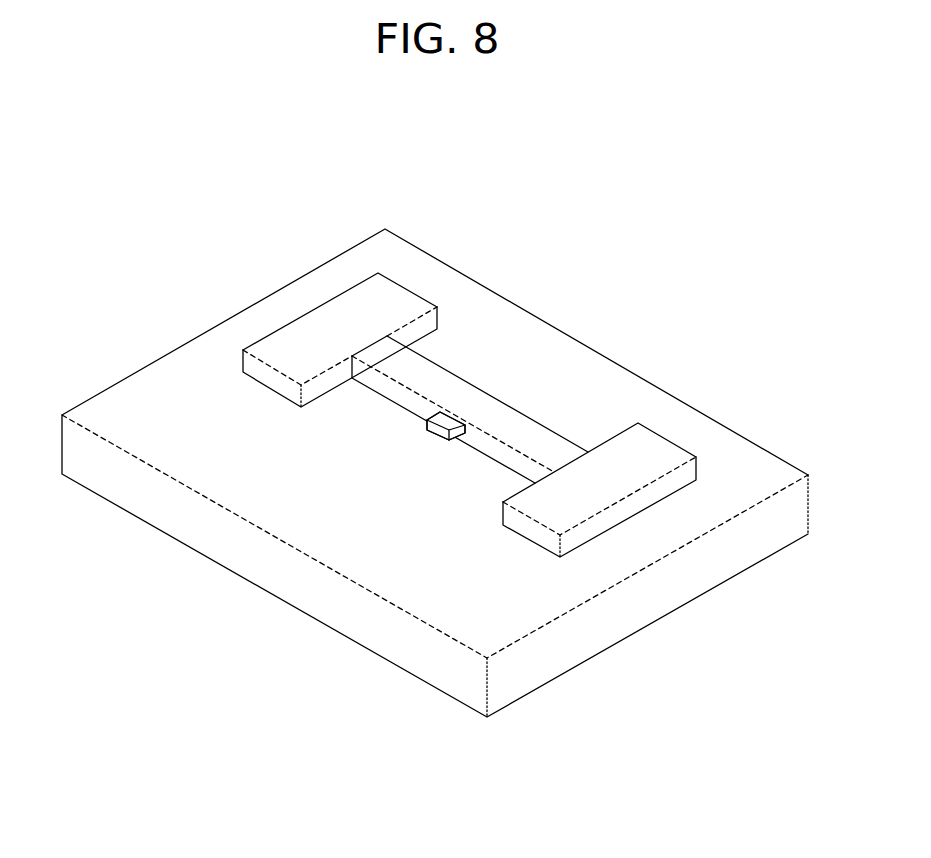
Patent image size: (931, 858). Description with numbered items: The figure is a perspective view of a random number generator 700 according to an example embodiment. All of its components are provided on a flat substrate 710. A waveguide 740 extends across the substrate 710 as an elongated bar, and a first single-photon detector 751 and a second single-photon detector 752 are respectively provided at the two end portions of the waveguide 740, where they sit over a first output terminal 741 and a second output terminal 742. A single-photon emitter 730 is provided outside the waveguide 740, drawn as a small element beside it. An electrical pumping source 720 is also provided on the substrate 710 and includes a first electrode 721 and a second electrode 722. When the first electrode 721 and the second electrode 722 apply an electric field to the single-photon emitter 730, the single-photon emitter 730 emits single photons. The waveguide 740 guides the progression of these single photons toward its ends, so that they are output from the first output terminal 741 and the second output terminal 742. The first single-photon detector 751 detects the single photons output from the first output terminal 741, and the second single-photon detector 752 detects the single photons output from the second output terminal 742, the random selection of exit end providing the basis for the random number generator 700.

The random number generator 700 is at (435, 457).
The substrate 710 is at (645, 617).
The electrical pumping source 720 is at (426, 441).
The first electrode 721 is at (427, 433).
The second electrode 722 is at (450, 443).
The single-photon emitter 730 is at (450, 413).
The waveguide 740 is at (523, 425).
The first output terminal 741 is at (360, 305).
The second output terminal 742 is at (620, 456).
The first single-photon detector 751 is at (402, 295).
The second single-photon detector 752 is at (663, 443).